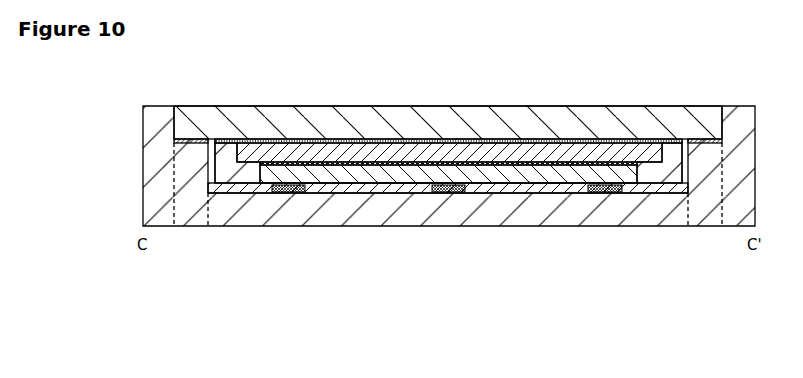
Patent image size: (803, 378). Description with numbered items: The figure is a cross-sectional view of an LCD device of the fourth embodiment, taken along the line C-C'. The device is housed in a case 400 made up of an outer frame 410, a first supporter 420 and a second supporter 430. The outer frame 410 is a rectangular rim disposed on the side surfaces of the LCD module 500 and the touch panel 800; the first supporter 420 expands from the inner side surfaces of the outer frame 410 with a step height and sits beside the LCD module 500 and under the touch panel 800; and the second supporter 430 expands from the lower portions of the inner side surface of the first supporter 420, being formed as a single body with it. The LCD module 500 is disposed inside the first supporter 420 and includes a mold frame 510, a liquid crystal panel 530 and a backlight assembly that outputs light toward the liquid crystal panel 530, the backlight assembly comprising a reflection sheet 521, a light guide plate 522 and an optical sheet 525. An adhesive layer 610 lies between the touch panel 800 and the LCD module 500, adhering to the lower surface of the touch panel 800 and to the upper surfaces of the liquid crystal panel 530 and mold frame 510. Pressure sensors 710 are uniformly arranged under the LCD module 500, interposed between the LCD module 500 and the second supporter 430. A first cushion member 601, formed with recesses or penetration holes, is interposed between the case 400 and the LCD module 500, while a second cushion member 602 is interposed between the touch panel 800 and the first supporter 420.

The case 400 is at (448, 216).
The outer frame 410 is at (157, 227).
The first supporter 420 is at (195, 227).
The second supporter 430 is at (448, 241).
The LCD module 500 is at (471, 250).
The mold frame 510 is at (682, 186).
The reflection sheet 521 is at (445, 305).
The light guide plate 522 is at (573, 172).
The optical sheet 525 is at (520, 166).
The liquid crystal panel 530 is at (475, 153).
The first cushion member 601 is at (448, 236).
The second cushion member 602 is at (708, 137).
The adhesive layer 610 is at (350, 139).
The pressure sensors 710 is at (297, 193).
The touch panel 800 is at (465, 116).